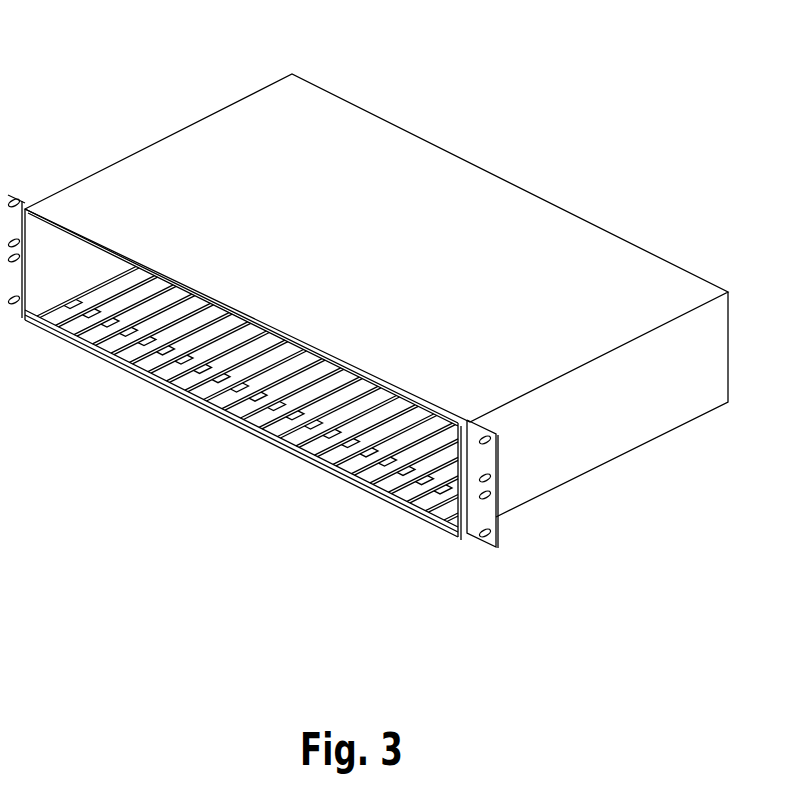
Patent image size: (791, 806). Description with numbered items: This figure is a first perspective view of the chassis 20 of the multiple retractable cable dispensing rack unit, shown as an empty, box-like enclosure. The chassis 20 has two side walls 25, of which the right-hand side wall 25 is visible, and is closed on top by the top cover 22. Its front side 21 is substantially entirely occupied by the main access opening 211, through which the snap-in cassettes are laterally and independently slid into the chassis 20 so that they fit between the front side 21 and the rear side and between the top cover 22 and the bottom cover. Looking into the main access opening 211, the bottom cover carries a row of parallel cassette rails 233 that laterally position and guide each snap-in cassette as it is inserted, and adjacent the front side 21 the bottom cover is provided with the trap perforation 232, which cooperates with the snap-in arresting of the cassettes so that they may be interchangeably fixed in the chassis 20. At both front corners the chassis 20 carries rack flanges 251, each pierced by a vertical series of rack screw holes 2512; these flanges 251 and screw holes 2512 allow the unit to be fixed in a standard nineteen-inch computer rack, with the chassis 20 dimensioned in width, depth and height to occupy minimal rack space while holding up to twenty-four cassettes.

The chassis 20 is at (367, 354).
The front side 21 is at (234, 371).
The main access opening 211 is at (234, 371).
The top cover 22 is at (382, 132).
The side wall 25 is at (583, 455).
The trap perforation 232 is at (423, 507).
The cassette rails 233 is at (360, 462).
The rack flange 251 is at (289, 361).
The rack screw holes 2512 is at (22, 198).